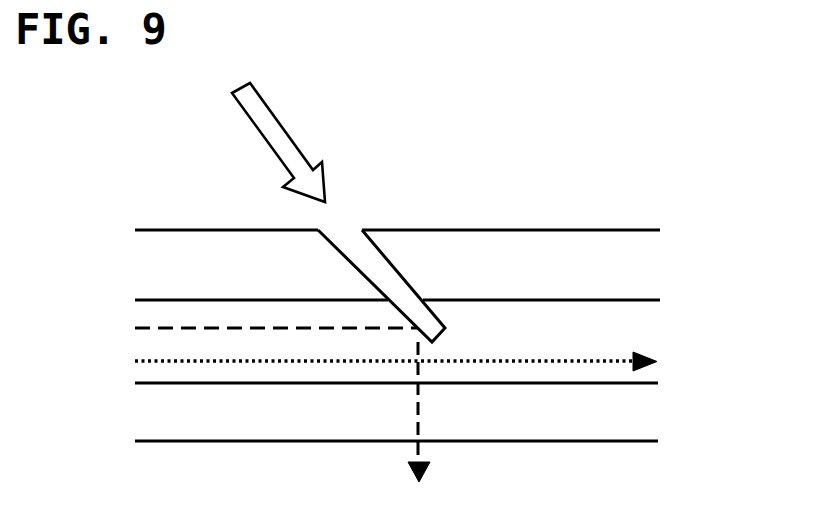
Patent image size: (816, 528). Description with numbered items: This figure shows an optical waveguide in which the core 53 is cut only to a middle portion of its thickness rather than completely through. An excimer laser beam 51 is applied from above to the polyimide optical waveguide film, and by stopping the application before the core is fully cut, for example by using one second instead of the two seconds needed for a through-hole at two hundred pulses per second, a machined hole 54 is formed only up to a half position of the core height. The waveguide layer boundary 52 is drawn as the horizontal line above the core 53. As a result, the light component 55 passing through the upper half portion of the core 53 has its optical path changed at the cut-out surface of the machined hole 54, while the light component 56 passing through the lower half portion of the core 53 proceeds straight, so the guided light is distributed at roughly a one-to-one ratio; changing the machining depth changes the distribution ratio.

The excimer laser beam 51 is at (290, 132).
The upper boundary of optical waveguide layer 52 is at (632, 243).
The core 53 is at (632, 328).
The machined hole 54 is at (381, 241).
The light component passing through the upper half portion of the core 55 is at (163, 330).
The light component passing through the lower half portion of the core 56 is at (192, 362).